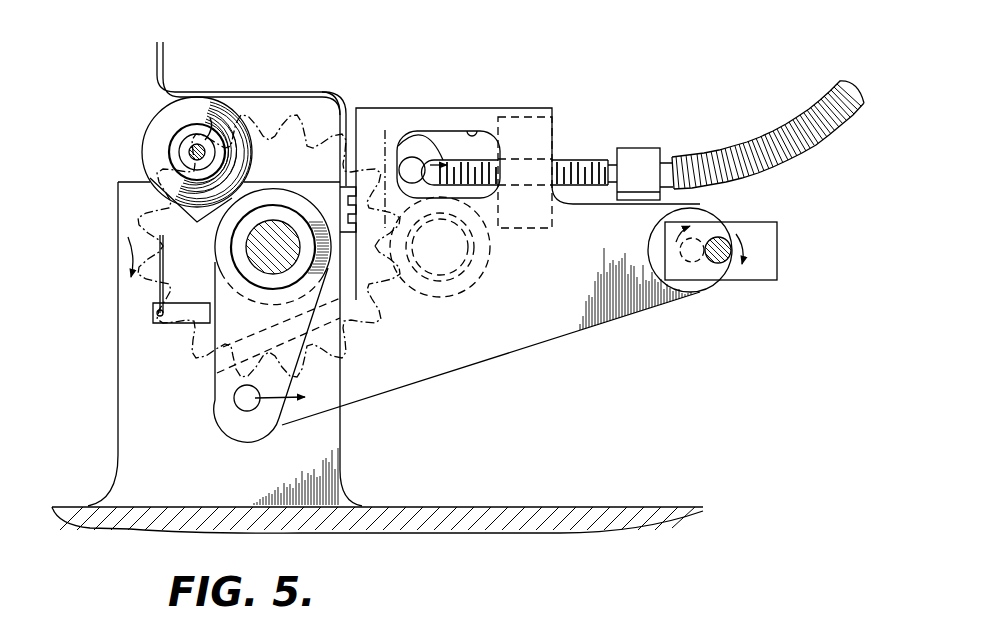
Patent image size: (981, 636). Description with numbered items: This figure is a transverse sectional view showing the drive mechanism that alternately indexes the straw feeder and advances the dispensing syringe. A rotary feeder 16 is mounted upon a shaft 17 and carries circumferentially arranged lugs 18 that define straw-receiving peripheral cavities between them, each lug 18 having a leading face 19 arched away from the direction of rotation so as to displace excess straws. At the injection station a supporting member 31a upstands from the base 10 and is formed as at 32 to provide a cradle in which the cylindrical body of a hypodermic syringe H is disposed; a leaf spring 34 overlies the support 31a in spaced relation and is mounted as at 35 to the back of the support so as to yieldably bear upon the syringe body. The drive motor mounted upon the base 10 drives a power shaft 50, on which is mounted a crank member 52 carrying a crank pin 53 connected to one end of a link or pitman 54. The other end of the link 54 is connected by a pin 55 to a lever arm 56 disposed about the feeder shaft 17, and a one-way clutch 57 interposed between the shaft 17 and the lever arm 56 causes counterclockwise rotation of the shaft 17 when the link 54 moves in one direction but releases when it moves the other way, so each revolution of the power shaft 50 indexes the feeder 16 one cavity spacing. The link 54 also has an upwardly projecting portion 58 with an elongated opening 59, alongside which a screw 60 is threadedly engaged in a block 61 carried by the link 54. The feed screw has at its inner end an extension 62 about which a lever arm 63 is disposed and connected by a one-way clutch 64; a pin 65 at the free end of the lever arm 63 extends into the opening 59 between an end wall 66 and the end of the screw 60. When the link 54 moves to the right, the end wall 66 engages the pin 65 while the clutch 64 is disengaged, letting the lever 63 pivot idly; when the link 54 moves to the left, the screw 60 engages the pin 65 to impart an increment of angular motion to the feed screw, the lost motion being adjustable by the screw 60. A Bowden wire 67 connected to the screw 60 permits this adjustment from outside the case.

The base 10 is at (502, 514).
The rotary feeder 16 is at (316, 138).
The shaft 17 is at (268, 230).
The lugs 18 is at (286, 124).
The leading face 19 is at (385, 326).
The supporting member 31a is at (205, 457).
The cradle 32 is at (190, 203).
The leaf spring 34 is at (229, 92).
The mounting 35 is at (352, 212).
The power shaft 50 is at (724, 243).
The crank member 52 is at (778, 247).
The crank pin 53 is at (692, 262).
The link 54 is at (628, 322).
The pin 55 is at (246, 411).
The lever arm 56 is at (322, 404).
The one-way clutch 57 is at (296, 216).
The upwardly projecting portion 58 is at (456, 114).
The elongated opening 59 is at (474, 133).
The screw 60 is at (572, 166).
The block 61 is at (532, 116).
The extension 62 is at (453, 266).
The lever arm 63 is at (423, 150).
The one-way clutch 64 is at (486, 248).
The pin 65 is at (410, 160).
The end wall 66 is at (402, 142).
The Bowden wire 67 is at (752, 142).
The hypodermic syringe H is at (143, 122).